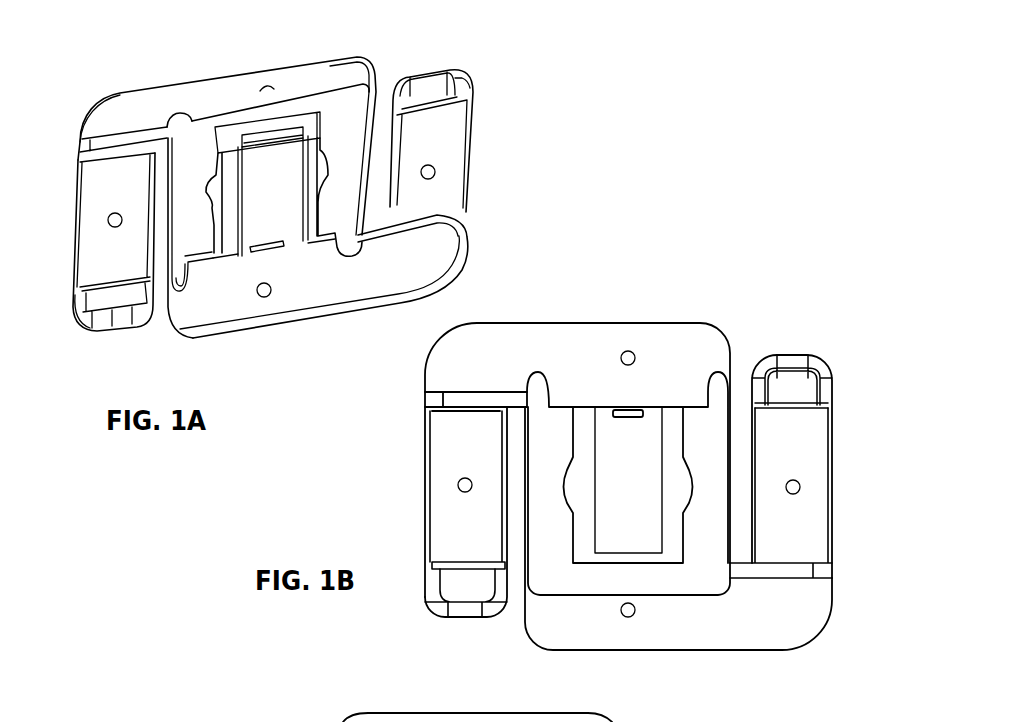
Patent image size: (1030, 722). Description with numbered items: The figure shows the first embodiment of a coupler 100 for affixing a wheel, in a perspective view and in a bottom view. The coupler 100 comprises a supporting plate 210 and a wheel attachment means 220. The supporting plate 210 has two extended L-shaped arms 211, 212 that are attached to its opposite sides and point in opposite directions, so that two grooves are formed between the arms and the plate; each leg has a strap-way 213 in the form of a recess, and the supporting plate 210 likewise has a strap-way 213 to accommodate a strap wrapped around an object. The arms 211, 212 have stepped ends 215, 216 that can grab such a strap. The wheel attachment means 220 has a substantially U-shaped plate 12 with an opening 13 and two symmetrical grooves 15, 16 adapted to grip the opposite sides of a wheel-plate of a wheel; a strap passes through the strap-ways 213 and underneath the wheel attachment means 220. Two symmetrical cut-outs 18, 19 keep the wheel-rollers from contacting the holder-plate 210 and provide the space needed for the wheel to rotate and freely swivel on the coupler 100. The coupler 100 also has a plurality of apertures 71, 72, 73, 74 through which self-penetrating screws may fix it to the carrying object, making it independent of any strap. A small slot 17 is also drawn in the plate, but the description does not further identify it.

In FIG. 1A, the coupler 100 is at (512, 95).
In FIG. 1B, the coupler 100 is at (358, 450).
In FIG. 1A, the substantially U-shaped plate 12 is at (320, 100).
In FIG. 1A, the opening 13 is at (240, 280).
In FIG. 1B, the opening 13 is at (628, 485).
In FIG. 1A, the groove 15 is at (208, 280).
In FIG. 1A, the groove 16 is at (323, 258).
In FIG. 1A, the slot 17 is at (268, 254).
In FIG. 1B, the slot 17 is at (633, 405).
In FIG. 1A, the cut-out 18 is at (207, 190).
In FIG. 1A, the cut-out 19 is at (325, 182).
In FIG. 1B, the aperture 71 is at (462, 478).
In FIG. 1B, the aperture 72 is at (628, 350).
In FIG. 1B, the aperture 73 is at (800, 478).
In FIG. 1B, the aperture 74 is at (628, 618).
In FIG. 1A, the supporting plate 210 is at (130, 100).
In FIG. 1B, the supporting plate 210 is at (583, 625).
In FIG. 1A, the L-shaped arm 211 is at (103, 300).
In FIG. 1B, the L-shaped arm 211 is at (463, 590).
In FIG. 1A, the L-shaped arm 212 is at (425, 95).
In FIG. 1B, the L-shaped arm 212 is at (800, 385).
In FIG. 1A, the strap-way 213 is at (92, 256).
In FIG. 1B, the strap-way 213 is at (450, 530).
In FIG. 1A, the stepped end 215 is at (80, 320).
In FIG. 1A, the stepped end 216 is at (462, 75).
In FIG. 1A, the wheel attachment means 220 is at (188, 122).
In FIG. 1B, the wheel attachment means 220 is at (700, 575).